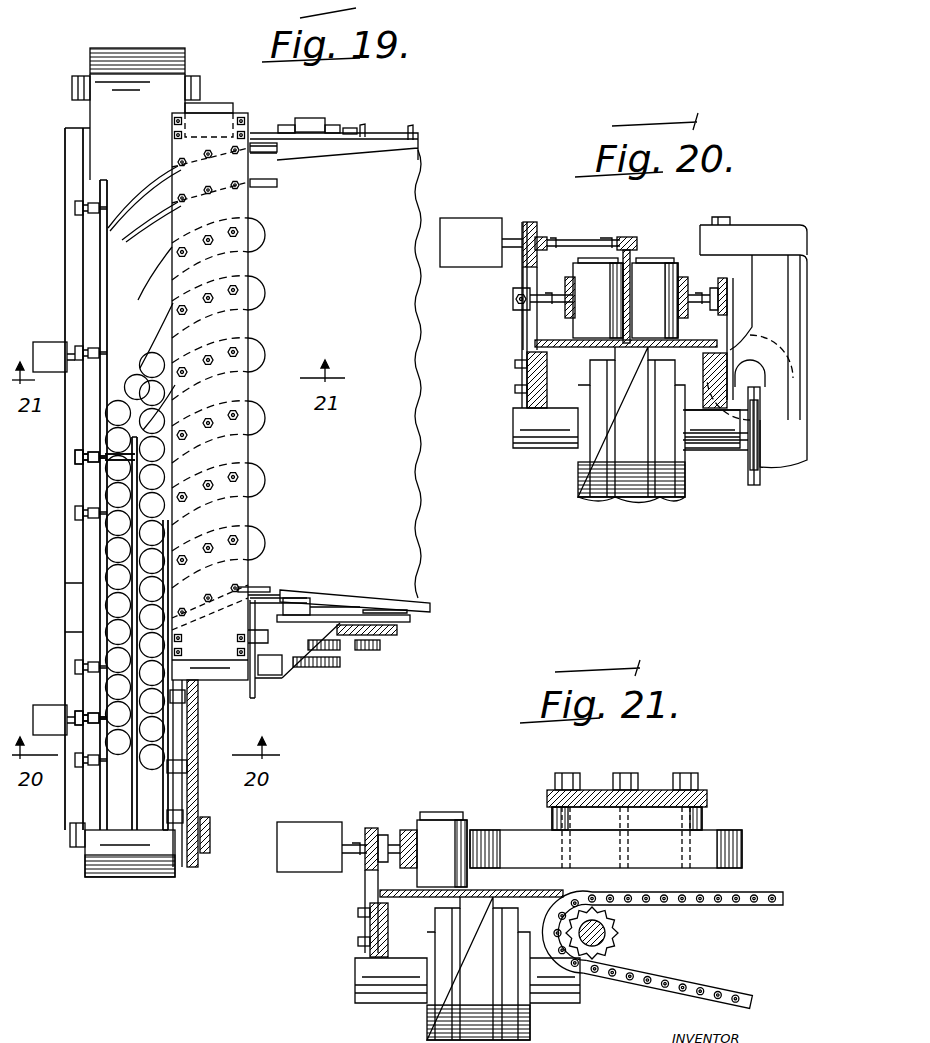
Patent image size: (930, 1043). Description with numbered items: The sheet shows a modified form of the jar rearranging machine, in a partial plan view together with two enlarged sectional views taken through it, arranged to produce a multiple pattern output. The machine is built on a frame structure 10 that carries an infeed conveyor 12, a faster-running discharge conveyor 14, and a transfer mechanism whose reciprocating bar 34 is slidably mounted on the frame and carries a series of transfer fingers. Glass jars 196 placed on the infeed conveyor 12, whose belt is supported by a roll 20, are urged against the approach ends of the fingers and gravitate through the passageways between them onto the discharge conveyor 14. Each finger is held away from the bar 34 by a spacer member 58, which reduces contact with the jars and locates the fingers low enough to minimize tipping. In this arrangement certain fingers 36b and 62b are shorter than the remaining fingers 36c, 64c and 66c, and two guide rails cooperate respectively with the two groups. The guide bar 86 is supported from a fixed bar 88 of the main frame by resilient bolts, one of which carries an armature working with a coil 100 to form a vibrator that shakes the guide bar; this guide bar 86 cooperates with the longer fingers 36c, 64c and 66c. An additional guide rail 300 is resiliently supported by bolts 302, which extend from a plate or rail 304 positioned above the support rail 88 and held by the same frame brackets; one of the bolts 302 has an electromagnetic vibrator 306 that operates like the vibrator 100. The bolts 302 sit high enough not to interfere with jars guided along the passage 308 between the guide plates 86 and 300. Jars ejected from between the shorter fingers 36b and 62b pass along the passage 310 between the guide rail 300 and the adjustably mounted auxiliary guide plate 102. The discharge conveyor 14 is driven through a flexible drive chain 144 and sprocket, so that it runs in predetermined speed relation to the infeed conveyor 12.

In FIG. 20, the frame structure 10 is at (535, 372).
In FIG. 21, the frame structure 10 is at (368, 933).
In FIG. 21, the infeed conveyor 12 is at (713, 900).
In FIG. 19, the discharge conveyor 14 is at (103, 112).
In FIG. 20, the discharge conveyor 14 is at (572, 348).
In FIG. 21, the discharge conveyor 14 is at (383, 888).
In FIG. 21, the roll 20 is at (607, 944).
In FIG. 21, the reciprocating bar 34 is at (708, 794).
In FIG. 19, the transfer finger 36b is at (268, 540).
In FIG. 19, the transfer finger 36c is at (268, 238).
In FIG. 21, the transfer finger 36c is at (503, 845).
In FIG. 21, the spacer member 58 is at (705, 818).
In FIG. 19, the transfer finger 62b is at (268, 590).
In FIG. 19, the transfer finger 64c is at (272, 190).
In FIG. 19, the transfer finger 66c is at (268, 156).
In FIG. 19, the guide bar 86 is at (105, 267).
In FIG. 21, the guide bar 86 is at (406, 829).
In FIG. 19, the fixed bar 88 is at (86, 242).
In FIG. 20, the fixed bar 88 is at (537, 315).
In FIG. 21, the fixed bar 88 is at (375, 827).
In FIG. 19, the coil 100 is at (47, 341).
In FIG. 21, the coil 100 is at (325, 822).
In FIG. 19, the auxiliary guide plate 102 is at (168, 723).
In FIG. 20, the auxiliary guide plate 102 is at (693, 283).
In FIG. 19, the flexible drive chain 144 is at (198, 866).
In FIG. 20, the flexible drive chain 144 is at (754, 486).
In FIG. 21, the glass jar 196 is at (434, 832).
In FIG. 19, the guide rail 300 is at (133, 558).
In FIG. 20, the guide rail 300 is at (630, 303).
In FIG. 19, the bolt 302 is at (108, 470).
In FIG. 20, the bolt 302 is at (588, 240).
In FIG. 19, the plate or rail 304 is at (83, 610).
In FIG. 20, the plate or rail 304 is at (528, 222).
In FIG. 19, the electromagnetic vibrator 306 is at (61, 714).
In FIG. 20, the electromagnetic vibrator 306 is at (484, 258).
In FIG. 19, the passage 308 is at (118, 802).
In FIG. 19, the passage 310 is at (150, 793).